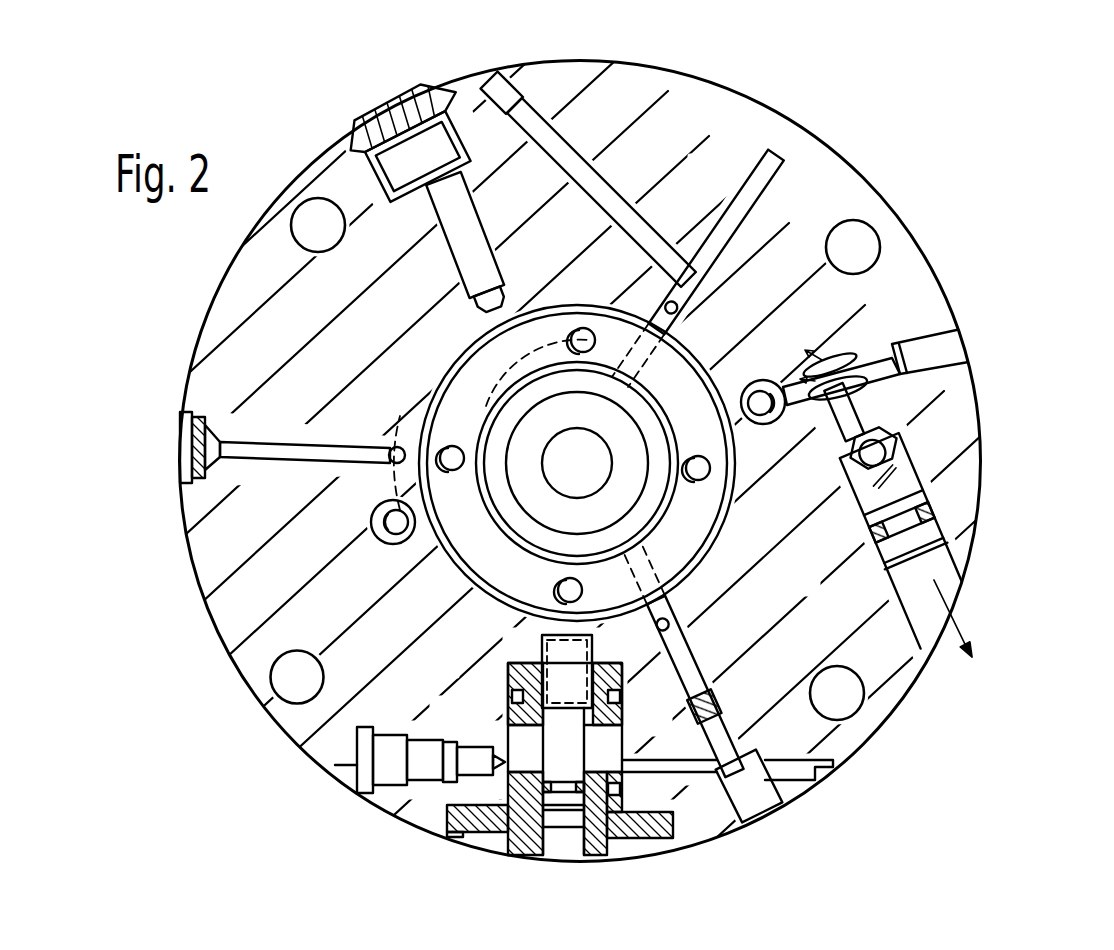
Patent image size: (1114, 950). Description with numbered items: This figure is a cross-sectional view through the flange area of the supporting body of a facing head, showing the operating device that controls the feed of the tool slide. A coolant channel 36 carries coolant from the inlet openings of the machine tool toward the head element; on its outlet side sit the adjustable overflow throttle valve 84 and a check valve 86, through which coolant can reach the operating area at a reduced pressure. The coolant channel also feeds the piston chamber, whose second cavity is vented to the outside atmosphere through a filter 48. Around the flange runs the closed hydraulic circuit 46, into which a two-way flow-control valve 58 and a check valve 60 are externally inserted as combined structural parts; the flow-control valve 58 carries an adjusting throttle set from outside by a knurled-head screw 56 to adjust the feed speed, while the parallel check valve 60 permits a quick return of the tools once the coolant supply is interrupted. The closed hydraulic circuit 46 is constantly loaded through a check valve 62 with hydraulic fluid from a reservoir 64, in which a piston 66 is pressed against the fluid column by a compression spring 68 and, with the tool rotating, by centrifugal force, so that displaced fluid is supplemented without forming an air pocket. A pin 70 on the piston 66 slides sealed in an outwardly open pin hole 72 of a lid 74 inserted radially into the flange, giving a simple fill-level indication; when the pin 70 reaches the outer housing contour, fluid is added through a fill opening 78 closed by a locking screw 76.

The coolant channel 36 is at (767, 382).
The closed hydraulic circuit 46 is at (640, 236).
The filter 48 is at (180, 425).
The knurled-head screw 56 is at (388, 112).
The two-way flow-control valve 58 is at (443, 196).
The check valve 60 is at (457, 115).
The check valve 62 is at (735, 715).
The reservoir 64 is at (600, 757).
The piston 66 is at (525, 722).
The compression spring 68 is at (542, 640).
The pin 70 is at (570, 828).
The pin hole 72 is at (525, 830).
The lid 74 is at (512, 836).
The locking screw 76 is at (355, 760).
The fill opening 78 is at (500, 767).
The overflow throttle valve 84 is at (862, 360).
The check valve 86 is at (906, 447).